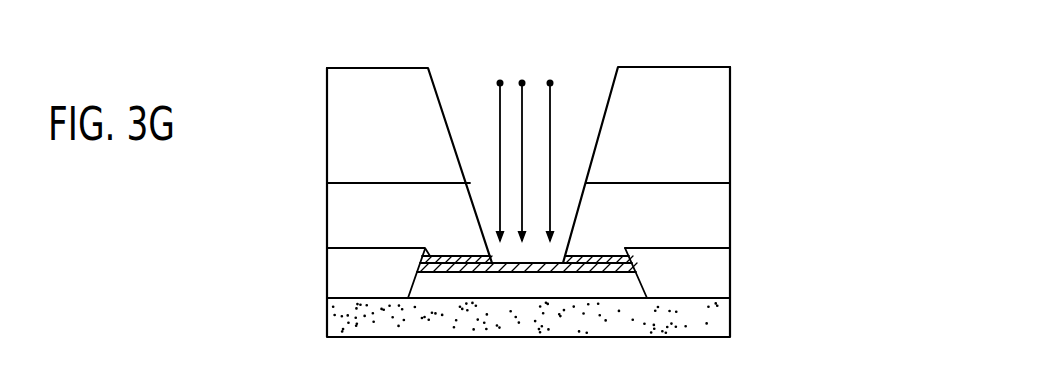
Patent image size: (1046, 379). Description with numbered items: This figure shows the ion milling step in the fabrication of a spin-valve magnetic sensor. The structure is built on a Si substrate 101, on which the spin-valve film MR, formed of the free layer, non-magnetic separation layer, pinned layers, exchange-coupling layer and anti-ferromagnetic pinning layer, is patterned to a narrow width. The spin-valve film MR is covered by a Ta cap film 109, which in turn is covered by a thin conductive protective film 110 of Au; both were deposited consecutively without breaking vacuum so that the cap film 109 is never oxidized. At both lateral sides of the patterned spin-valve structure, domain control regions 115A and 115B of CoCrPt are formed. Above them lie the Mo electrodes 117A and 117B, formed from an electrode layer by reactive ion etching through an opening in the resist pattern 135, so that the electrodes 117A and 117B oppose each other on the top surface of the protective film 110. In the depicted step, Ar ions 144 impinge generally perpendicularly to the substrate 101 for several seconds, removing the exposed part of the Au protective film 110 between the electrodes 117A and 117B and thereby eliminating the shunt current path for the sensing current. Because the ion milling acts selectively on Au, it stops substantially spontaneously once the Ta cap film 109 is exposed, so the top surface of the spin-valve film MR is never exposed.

The resist pattern 135 is at (398, 117).
The Ar ions 144 is at (528, 92).
The electrode 117B is at (345, 193).
The electrode 117A is at (688, 222).
The conductive protective film 110 is at (427, 255).
The cap film 109 is at (632, 268).
The domain control region 115B is at (385, 277).
The domain control region 115A is at (708, 275).
The spin-valve film MR is at (628, 285).
The substrate 101 is at (327, 315).